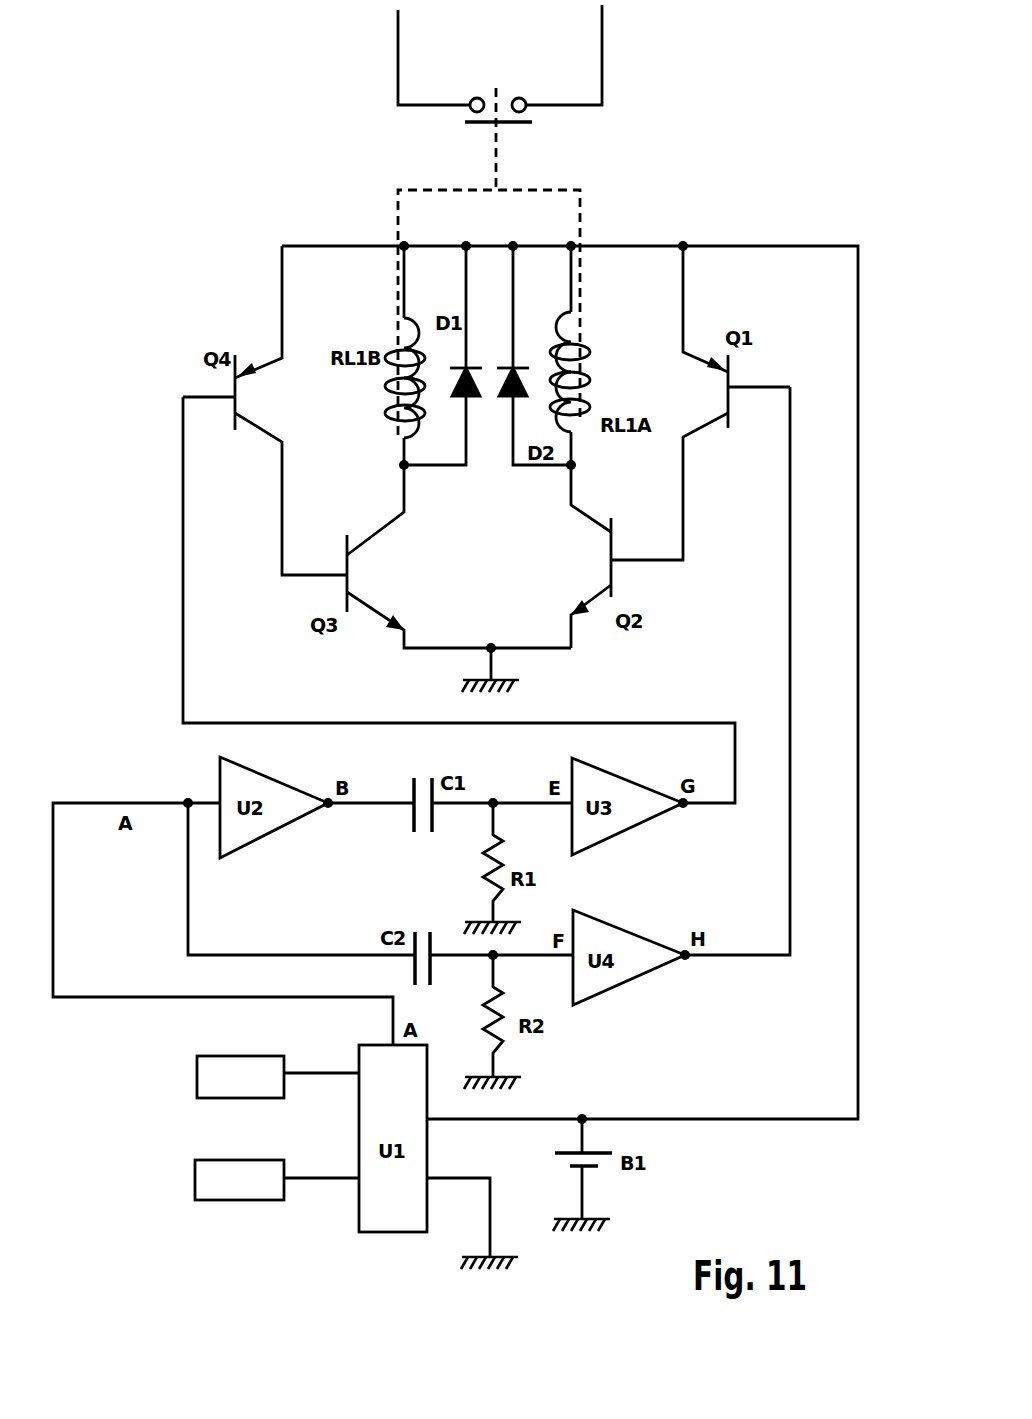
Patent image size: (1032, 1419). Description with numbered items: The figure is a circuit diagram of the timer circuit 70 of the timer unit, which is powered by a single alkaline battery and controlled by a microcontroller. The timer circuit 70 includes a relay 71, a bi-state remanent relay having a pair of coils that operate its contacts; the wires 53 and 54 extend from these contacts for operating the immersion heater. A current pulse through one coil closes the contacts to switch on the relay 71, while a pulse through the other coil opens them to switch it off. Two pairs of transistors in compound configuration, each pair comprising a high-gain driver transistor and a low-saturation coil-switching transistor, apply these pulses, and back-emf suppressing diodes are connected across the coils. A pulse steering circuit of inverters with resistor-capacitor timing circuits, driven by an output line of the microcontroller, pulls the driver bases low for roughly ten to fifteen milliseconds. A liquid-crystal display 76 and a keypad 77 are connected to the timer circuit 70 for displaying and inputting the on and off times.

The wire 53 is at (398, 50).
The wire 54 is at (602, 52).
The timer circuit 70 is at (825, 172).
The relay 71 is at (603, 171).
The liquid-crystal display 76 is at (207, 1078).
The keypad 77 is at (212, 1196).